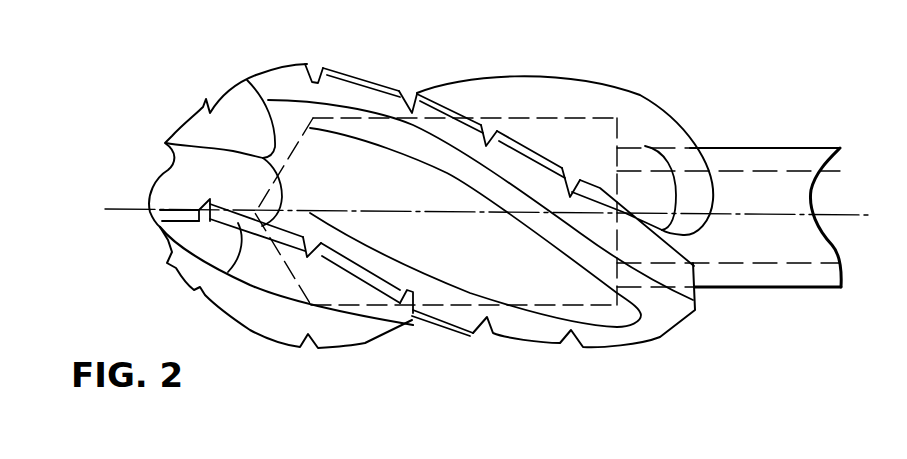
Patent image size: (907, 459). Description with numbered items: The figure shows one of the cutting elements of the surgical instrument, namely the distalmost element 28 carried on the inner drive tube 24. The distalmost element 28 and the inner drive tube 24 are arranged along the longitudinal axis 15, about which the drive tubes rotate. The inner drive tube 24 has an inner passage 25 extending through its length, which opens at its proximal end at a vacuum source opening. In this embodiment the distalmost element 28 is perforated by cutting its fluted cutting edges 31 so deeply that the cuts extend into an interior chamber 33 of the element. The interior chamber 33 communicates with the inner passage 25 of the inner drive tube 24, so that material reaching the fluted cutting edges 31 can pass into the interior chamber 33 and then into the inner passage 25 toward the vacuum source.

The longitudinal axis 15 is at (123, 209).
The inner drive tube 24 is at (734, 199).
The inner passage 25 is at (783, 197).
The distalmost element 28 is at (411, 206).
The fluted cutting edges 31 is at (343, 74).
The interior chamber 33 is at (452, 250).